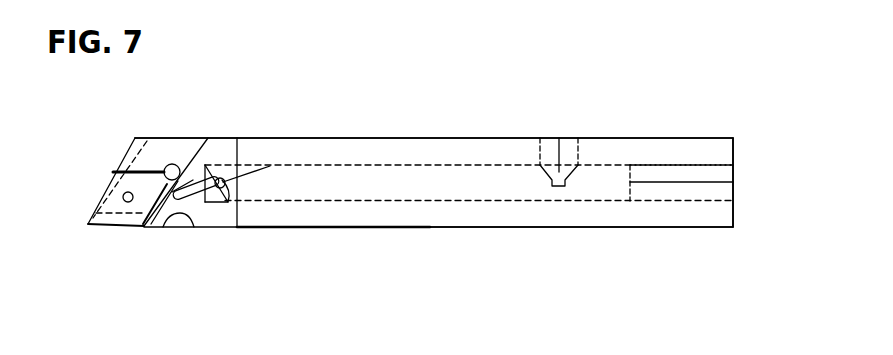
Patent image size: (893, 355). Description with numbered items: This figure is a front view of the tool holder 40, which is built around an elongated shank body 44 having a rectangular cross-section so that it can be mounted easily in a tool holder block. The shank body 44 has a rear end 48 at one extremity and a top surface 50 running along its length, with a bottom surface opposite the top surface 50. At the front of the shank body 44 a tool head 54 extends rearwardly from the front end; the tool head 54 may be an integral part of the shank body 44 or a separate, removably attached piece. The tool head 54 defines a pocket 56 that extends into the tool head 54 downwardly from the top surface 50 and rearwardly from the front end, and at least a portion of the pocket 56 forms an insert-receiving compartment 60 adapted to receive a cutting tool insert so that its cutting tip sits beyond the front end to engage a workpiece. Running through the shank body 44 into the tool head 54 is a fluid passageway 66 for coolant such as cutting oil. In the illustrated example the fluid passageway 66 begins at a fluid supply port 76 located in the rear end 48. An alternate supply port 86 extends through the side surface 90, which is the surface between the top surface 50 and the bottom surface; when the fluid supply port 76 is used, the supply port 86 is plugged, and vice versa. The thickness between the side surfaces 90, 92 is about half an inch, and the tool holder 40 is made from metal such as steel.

The tool holder 40 is at (437, 82).
The shank body 44 is at (490, 143).
The rear end 48 is at (733, 150).
The top surface 50 is at (470, 226).
The tool head 54 is at (134, 238).
The pocket 56 is at (94, 178).
The insert-receiving compartment 60 is at (110, 208).
The fluid passageway 66 is at (335, 165).
The fluid supply port 76 is at (733, 183).
The supply port 86 is at (540, 152).
The side surface 90 is at (668, 138).
The side surface 92 is at (660, 228).